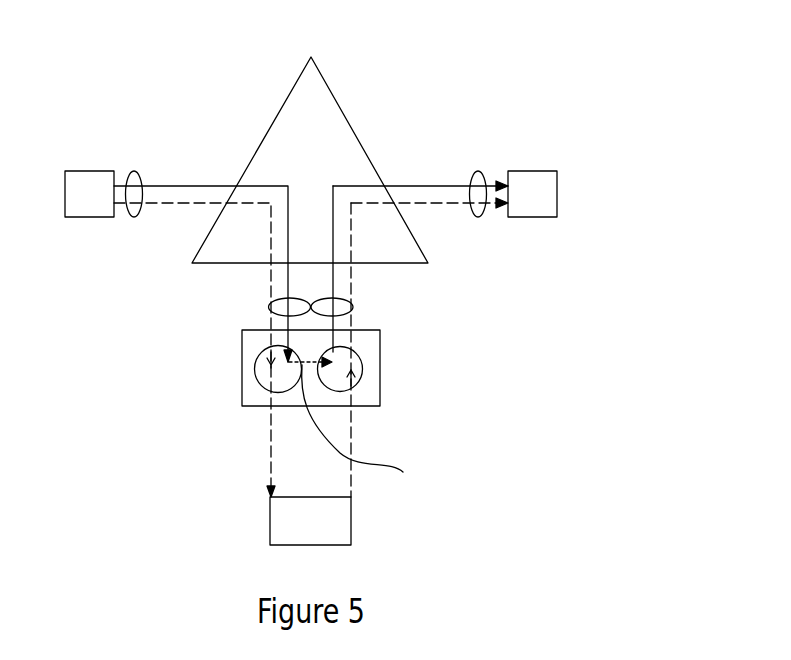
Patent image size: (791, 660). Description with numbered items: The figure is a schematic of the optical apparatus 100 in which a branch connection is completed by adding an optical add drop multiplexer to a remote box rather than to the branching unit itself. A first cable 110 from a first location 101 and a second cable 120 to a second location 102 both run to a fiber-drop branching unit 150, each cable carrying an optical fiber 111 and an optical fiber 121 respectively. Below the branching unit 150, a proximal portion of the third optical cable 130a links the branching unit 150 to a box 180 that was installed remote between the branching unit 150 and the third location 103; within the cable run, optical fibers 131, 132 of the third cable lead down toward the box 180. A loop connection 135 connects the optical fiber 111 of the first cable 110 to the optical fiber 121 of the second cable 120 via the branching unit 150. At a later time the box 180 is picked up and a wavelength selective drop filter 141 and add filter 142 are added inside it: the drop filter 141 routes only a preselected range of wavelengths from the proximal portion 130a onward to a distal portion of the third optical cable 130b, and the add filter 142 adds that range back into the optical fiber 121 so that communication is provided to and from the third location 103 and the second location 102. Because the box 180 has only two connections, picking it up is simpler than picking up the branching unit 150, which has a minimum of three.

The optical apparatus 100 is at (443, 130).
The first location 101 is at (90, 218).
The second location 102 is at (557, 200).
The third location 103 is at (325, 545).
The first cable 110 is at (172, 177).
The optical fiber 111 is at (137, 172).
The second cable 120 is at (399, 162).
The optical fiber 121 is at (478, 218).
The proximal portion of the third optical cable 130a is at (260, 288).
The distal portion of the third optical cable 130b is at (263, 457).
The optical fiber 131 is at (268, 305).
The optical fiber 132 is at (353, 307).
The loop connection 135 is at (361, 436).
The drop filter 141 is at (255, 365).
The add filter 142 is at (365, 367).
The branching unit 150 is at (270, 125).
The box 180 is at (382, 387).